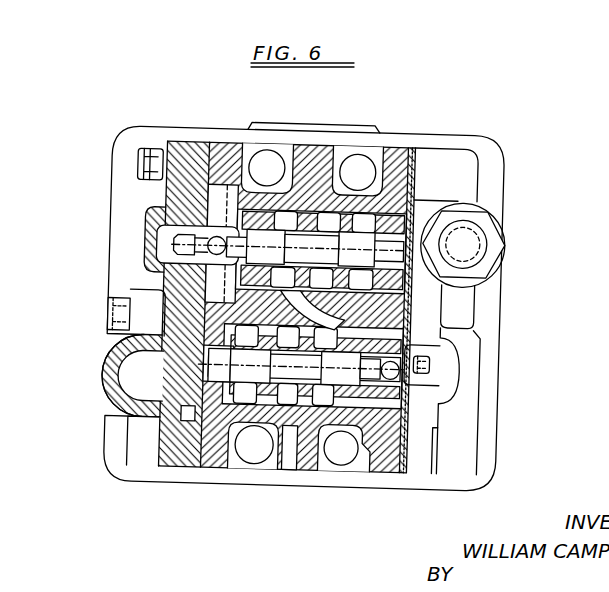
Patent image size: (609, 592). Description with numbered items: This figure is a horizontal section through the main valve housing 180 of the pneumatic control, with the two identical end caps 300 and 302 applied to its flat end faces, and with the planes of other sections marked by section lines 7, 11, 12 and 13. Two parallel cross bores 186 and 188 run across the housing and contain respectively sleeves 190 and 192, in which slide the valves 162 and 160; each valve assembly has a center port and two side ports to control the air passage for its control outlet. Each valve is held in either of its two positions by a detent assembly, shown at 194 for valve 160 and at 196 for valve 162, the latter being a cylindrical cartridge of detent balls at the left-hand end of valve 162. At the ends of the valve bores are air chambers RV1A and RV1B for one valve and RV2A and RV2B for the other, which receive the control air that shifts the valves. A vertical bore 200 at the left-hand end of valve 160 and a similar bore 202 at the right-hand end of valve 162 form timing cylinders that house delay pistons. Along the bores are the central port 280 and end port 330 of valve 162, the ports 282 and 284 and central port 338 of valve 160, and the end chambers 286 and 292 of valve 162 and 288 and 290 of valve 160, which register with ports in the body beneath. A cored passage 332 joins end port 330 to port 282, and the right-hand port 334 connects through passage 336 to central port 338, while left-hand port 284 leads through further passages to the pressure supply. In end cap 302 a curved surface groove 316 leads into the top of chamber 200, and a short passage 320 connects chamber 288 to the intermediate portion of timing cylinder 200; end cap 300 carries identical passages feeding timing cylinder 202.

The valve 160 is at (293, 478).
The valve 162 is at (304, 245).
The main valve housing 180 is at (336, 478).
The cross bore 186 is at (412, 180).
The cross bore 188 is at (220, 410).
The sleeve 190 is at (420, 197).
The sleeve 192 is at (262, 388).
The detent assembly 194 is at (388, 418).
The detent assembly 196 is at (217, 190).
The vertical bore 200 is at (135, 384).
The vertical bore 202 is at (503, 247).
The central port 280 is at (320, 222).
The port 282 is at (326, 390).
The left-hand port 284 is at (220, 305).
The chamber 286 is at (462, 207).
The chamber 288 is at (168, 450).
The right-hand chamber 290 is at (445, 405).
The left-hand chamber 292 is at (165, 222).
The end cap 300 is at (468, 160).
The end cap 302 is at (177, 188).
The curved surface groove 316 is at (182, 410).
The short passage 320 is at (140, 376).
The end port 330 is at (282, 222).
The cored passage 332 is at (305, 290).
The right-hand port 334 is at (410, 318).
The passage 336 is at (410, 343).
The central port 338 is at (288, 390).
The air chamber RV1A is at (445, 398).
The air chamber RV1B is at (183, 360).
The air chamber RV2A is at (175, 247).
The air chamber RV2B is at (440, 300).
The section line 7 is at (165, 365).
The section line 11 is at (352, 108).
The section line 12 is at (203, 113).
The section line 13 is at (405, 562).